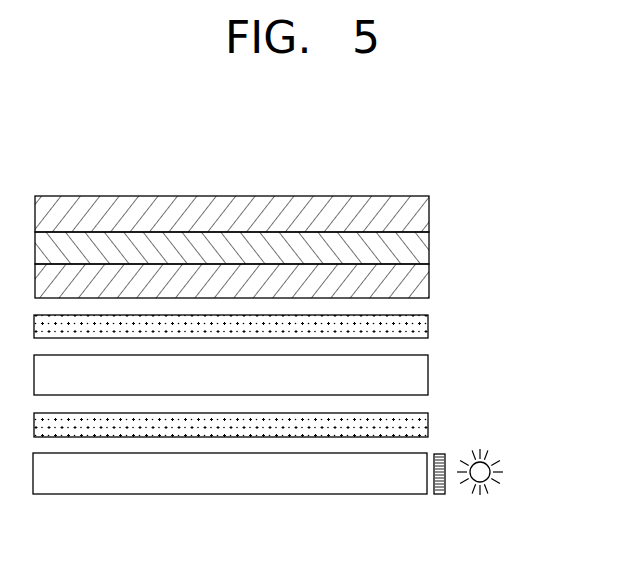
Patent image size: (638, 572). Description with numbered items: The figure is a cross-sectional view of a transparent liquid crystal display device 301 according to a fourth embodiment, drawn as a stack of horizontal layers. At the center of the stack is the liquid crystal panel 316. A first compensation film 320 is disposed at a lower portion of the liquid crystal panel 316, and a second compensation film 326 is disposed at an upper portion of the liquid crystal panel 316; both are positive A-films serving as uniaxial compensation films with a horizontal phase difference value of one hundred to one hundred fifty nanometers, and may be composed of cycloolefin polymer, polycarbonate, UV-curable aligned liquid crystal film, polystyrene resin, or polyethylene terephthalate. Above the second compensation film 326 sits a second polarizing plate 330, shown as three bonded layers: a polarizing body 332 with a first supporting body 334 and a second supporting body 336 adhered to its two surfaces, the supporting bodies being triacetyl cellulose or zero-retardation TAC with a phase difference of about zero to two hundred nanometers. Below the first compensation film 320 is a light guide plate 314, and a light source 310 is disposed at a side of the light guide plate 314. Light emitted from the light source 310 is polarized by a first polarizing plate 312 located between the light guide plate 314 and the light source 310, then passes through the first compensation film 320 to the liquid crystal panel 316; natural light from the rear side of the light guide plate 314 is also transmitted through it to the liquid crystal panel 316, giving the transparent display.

The transparent liquid crystal display device 301 is at (483, 152).
The second polarizing plate 330 is at (500, 197).
The second supporting body 336 is at (418, 213).
The polarizing body 332 is at (418, 250).
The first supporting body 334 is at (418, 285).
The second compensation film 326 is at (418, 325).
The liquid crystal panel 316 is at (418, 376).
The first compensation film 320 is at (418, 427).
The light guide plate 314 is at (388, 484).
The first polarizing plate 312 is at (440, 494).
The light source 310 is at (487, 467).